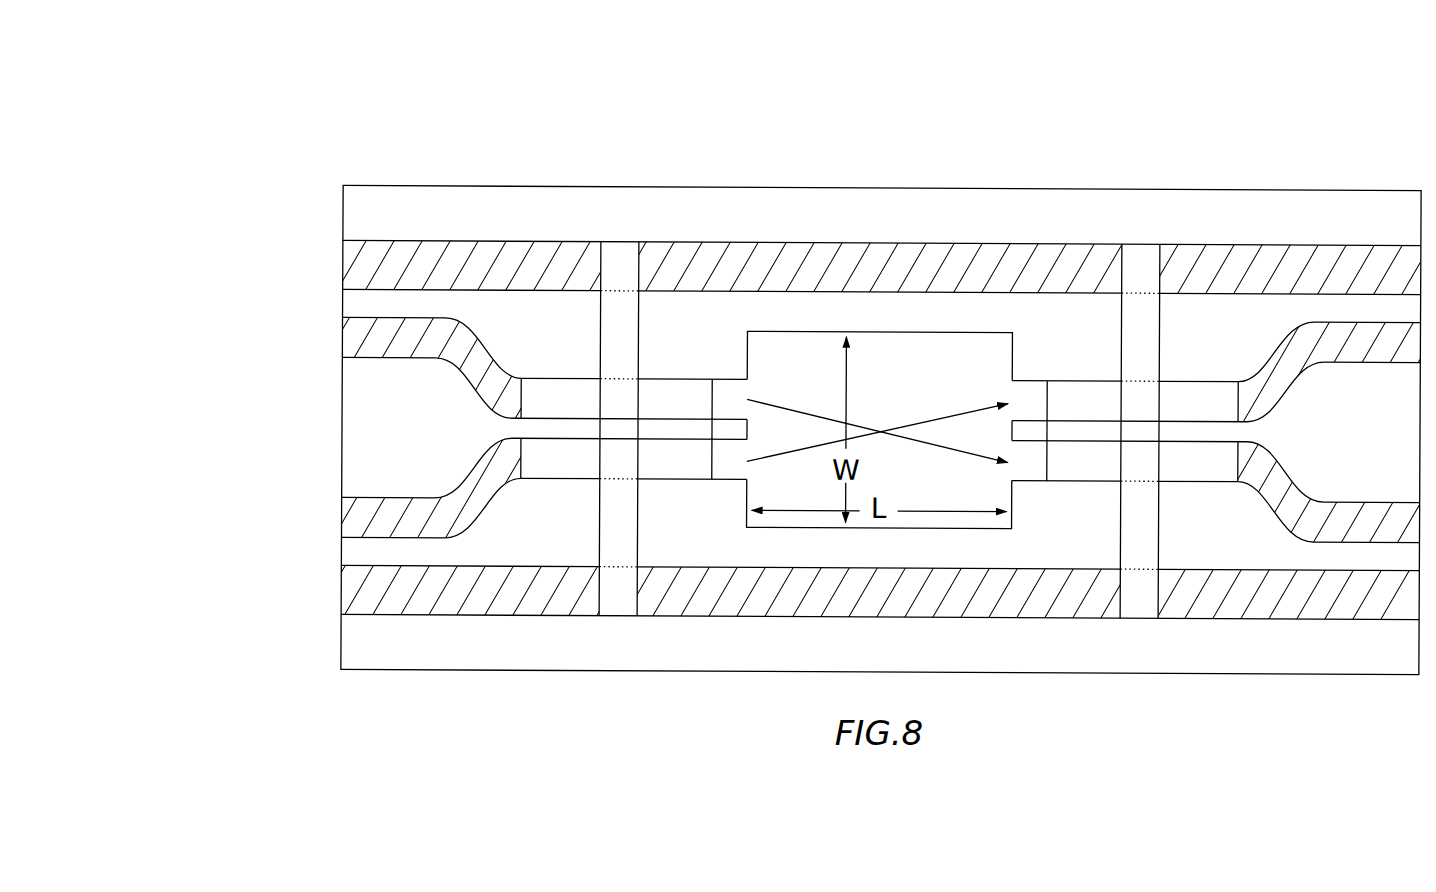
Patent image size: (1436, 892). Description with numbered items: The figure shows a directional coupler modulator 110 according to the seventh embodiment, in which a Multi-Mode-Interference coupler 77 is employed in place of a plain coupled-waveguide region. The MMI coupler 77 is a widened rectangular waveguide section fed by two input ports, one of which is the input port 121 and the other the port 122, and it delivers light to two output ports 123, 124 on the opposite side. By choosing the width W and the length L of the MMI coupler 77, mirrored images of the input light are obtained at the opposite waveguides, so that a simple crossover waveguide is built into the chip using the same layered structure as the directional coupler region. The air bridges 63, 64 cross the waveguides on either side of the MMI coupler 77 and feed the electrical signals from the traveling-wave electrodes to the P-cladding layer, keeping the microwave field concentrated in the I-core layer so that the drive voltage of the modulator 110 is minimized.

The directional coupler modulator 110 is at (222, 190).
The air bridge 63 is at (600, 318).
The air bridge 64 is at (600, 542).
The Multi-Mode-Interference coupler 77 is at (722, 323).
The input port 121 is at (712, 380).
The second input waveguide 122 is at (712, 480).
The output port 123 is at (1047, 380).
The output port 124 is at (1047, 480).